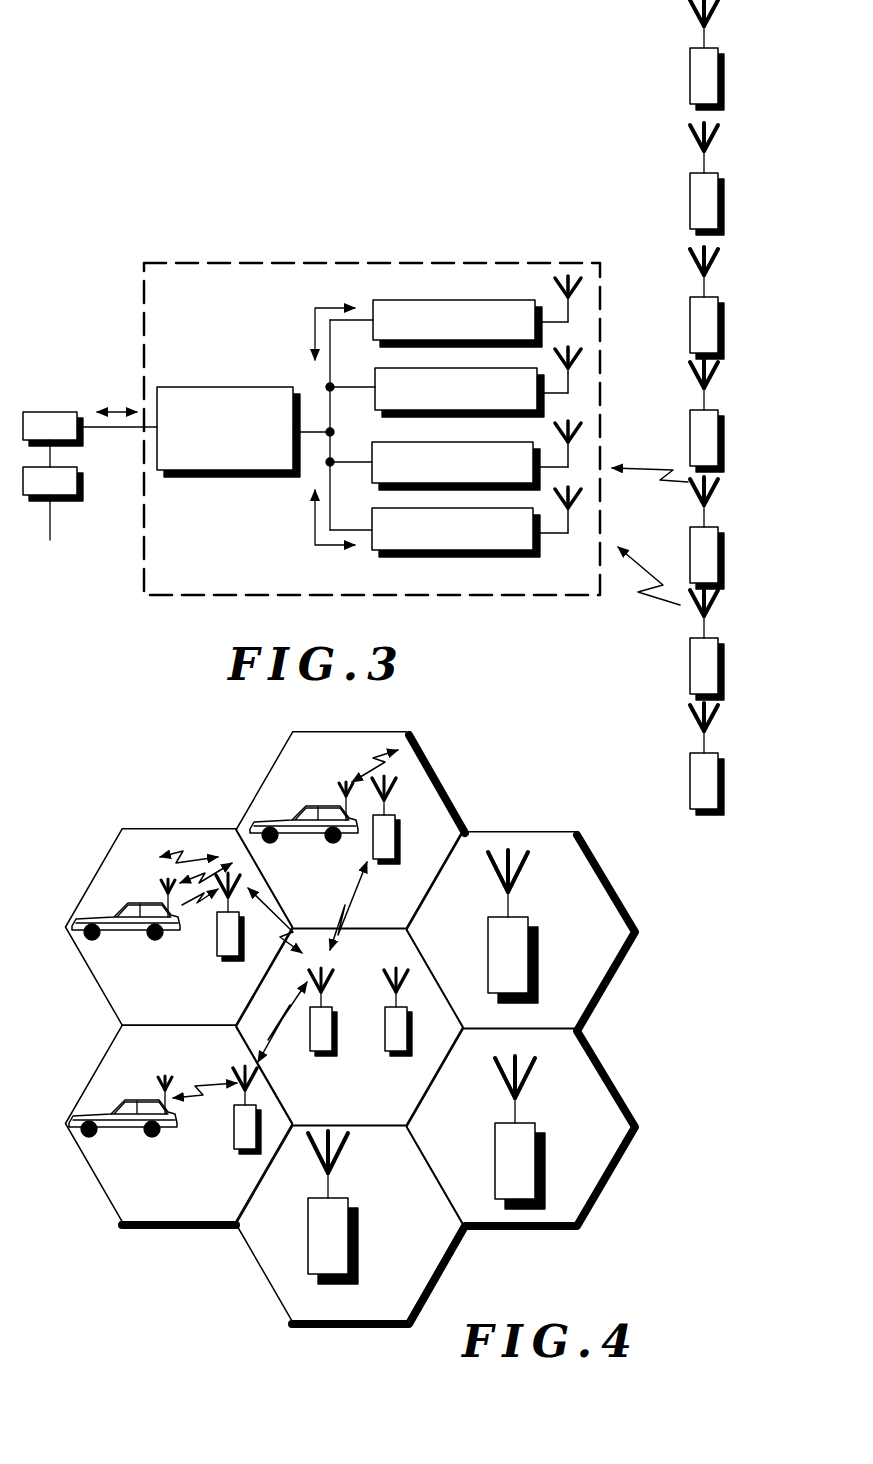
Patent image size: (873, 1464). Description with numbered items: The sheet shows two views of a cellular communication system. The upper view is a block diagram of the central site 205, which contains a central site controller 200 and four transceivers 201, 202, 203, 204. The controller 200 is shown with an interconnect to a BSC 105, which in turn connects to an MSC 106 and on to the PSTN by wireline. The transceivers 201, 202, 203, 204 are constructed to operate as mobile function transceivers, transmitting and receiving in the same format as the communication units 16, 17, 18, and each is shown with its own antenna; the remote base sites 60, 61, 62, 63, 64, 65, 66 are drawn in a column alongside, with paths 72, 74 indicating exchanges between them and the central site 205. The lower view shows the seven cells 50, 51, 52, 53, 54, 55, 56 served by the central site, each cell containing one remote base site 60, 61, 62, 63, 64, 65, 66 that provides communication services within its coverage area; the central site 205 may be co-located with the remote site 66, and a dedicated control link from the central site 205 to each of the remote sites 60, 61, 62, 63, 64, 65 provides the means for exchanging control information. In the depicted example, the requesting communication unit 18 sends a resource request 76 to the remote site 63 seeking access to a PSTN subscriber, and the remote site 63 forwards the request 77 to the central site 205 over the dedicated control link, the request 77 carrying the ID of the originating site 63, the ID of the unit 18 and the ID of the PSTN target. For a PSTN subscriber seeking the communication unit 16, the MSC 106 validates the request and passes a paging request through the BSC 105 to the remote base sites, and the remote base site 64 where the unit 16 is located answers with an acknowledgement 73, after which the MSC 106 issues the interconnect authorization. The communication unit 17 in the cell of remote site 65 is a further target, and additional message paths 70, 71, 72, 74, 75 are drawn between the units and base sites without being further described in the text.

In FIG. 4, the communication unit 16 is at (123, 934).
In FIG. 4, the communication unit 17 is at (123, 1133).
In FIG. 4, the communication unit 18 is at (302, 842).
In FIG. 4, the cell 50 is at (349, 1224).
In FIG. 4, the cell 51 is at (520, 1127).
In FIG. 4, the cell 52 is at (520, 930).
In FIG. 4, the cell 53 is at (349, 830).
In FIG. 4, the cell 54 is at (179, 927).
In FIG. 4, the cell 55 is at (179, 1123).
In FIG. 4, the cell 56 is at (349, 1027).
In FIG. 3, the remote base site 60 is at (724, 60).
In FIG. 4, the remote base site 60 is at (350, 1210).
In FIG. 3, the remote base site 61 is at (724, 185).
In FIG. 4, the remote base site 61 is at (530, 1125).
In FIG. 3, the remote base site 62 is at (724, 309).
In FIG. 4, the remote base site 62 is at (525, 925).
In FIG. 3, the remote base site 63 is at (724, 422).
In FIG. 4, the remote base site 63 is at (401, 824).
In FIG. 3, the remote base site 64 is at (724, 539).
In FIG. 4, the remote base site 64 is at (244, 921).
In FIG. 3, the remote base site 65 is at (724, 650).
In FIG. 4, the remote base site 65 is at (236, 1135).
In FIG. 3, the remote base site 66 is at (724, 765).
In FIG. 4, the remote base site 66 is at (413, 1015).
In FIG. 4, the RF communication link 70 is at (197, 903).
In FIG. 4, the RF communication link 71 is at (218, 868).
In FIG. 3, the RF communication link 72 is at (640, 472).
In FIG. 4, the RF communication link 72 is at (200, 856).
In FIG. 4, the acknowledgement 73 is at (290, 934).
In FIG. 3, the RF communication link 74 is at (637, 570).
In FIG. 4, the RF communication link 74 is at (277, 1046).
In FIG. 4, the RF communication link 75 is at (214, 1091).
In FIG. 4, the resource request 76 is at (372, 763).
In FIG. 4, the request 77 is at (363, 889).
In FIG. 3, the BSC 105 is at (52, 412).
In FIG. 3, the MSC 106 is at (77, 467).
In FIG. 3, the central site controller 200 is at (186, 387).
In FIG. 3, the transceiver 201 is at (413, 300).
In FIG. 3, the transceiver 202 is at (393, 368).
In FIG. 3, the transceiver 203 is at (463, 442).
In FIG. 3, the transceiver 204 is at (412, 557).
In FIG. 3, the central site 205 is at (471, 597).
In FIG. 4, the central site 205 is at (338, 1015).